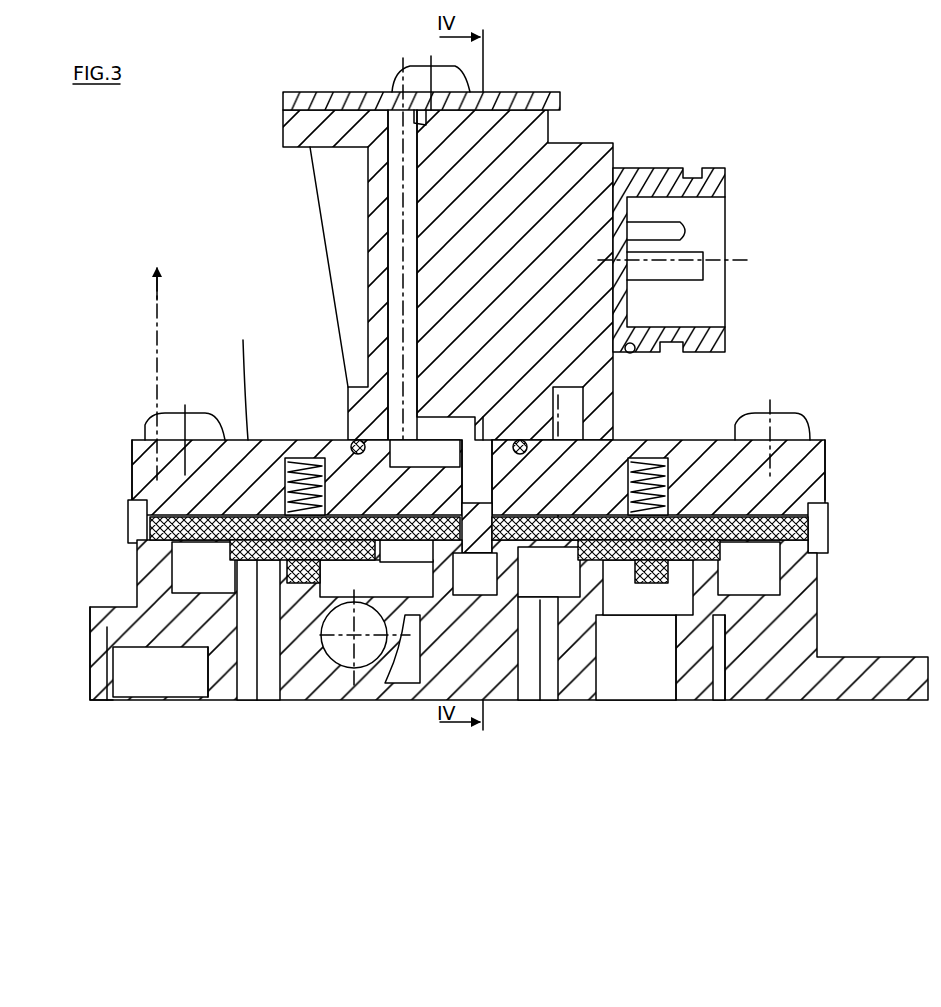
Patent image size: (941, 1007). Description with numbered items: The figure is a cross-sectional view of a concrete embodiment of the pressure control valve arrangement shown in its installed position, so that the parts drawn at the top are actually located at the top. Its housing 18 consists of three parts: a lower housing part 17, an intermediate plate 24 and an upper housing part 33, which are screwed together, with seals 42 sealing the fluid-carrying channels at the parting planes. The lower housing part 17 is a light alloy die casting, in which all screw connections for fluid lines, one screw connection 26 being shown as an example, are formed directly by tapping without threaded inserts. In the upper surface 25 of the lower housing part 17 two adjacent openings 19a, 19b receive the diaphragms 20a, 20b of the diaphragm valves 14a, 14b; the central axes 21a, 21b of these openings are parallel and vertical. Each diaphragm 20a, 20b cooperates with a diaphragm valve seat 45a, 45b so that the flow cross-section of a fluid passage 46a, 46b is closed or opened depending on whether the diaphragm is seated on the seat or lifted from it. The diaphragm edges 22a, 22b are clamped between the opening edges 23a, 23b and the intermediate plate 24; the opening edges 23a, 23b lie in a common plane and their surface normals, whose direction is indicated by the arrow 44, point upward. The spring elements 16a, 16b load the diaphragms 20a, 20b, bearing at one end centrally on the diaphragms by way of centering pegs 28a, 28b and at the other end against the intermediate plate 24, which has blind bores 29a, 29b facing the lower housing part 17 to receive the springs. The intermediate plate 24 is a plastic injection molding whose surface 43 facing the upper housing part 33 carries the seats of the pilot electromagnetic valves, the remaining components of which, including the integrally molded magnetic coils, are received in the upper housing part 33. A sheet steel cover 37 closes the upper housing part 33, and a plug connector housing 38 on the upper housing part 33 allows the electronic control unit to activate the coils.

The diaphragm valve 14a is at (265, 428).
The diaphragm valve 14b is at (680, 430).
The spring element 16a is at (295, 540).
The spring element 16b is at (660, 540).
The lower housing part 17 is at (805, 620).
The housing 18 is at (855, 290).
The opening 19a is at (198, 568).
The opening 19b is at (768, 580).
The diaphragm 20a is at (240, 520).
The diaphragm 20b is at (690, 520).
The central axis 21a is at (306, 458).
The central axis 21b is at (648, 458).
The diaphragm edge 22a is at (135, 478).
The diaphragm edge 22b is at (815, 480).
The opening edge 23a is at (135, 540).
The opening edge 23b is at (815, 538).
The intermediate plate 24 is at (135, 448).
The upper surface 25 is at (468, 500).
The screw connection 26 is at (92, 668).
The centering peg 28a is at (280, 590).
The centering peg 28b is at (618, 600).
The blind bore 29a is at (248, 560).
The blind bore 29b is at (655, 580).
The upper housing part 33 is at (580, 150).
The cover 37 is at (290, 100).
The plug connector housing 38 is at (722, 176).
The seal 42 is at (352, 443).
The surface 43 is at (244, 375).
The arrow 44 is at (155, 315).
The diaphragm valve seat 45a is at (200, 600).
The diaphragm valve seat 45b is at (720, 600).
The fluid passage 46a is at (298, 612).
The fluid passage 46b is at (620, 570).